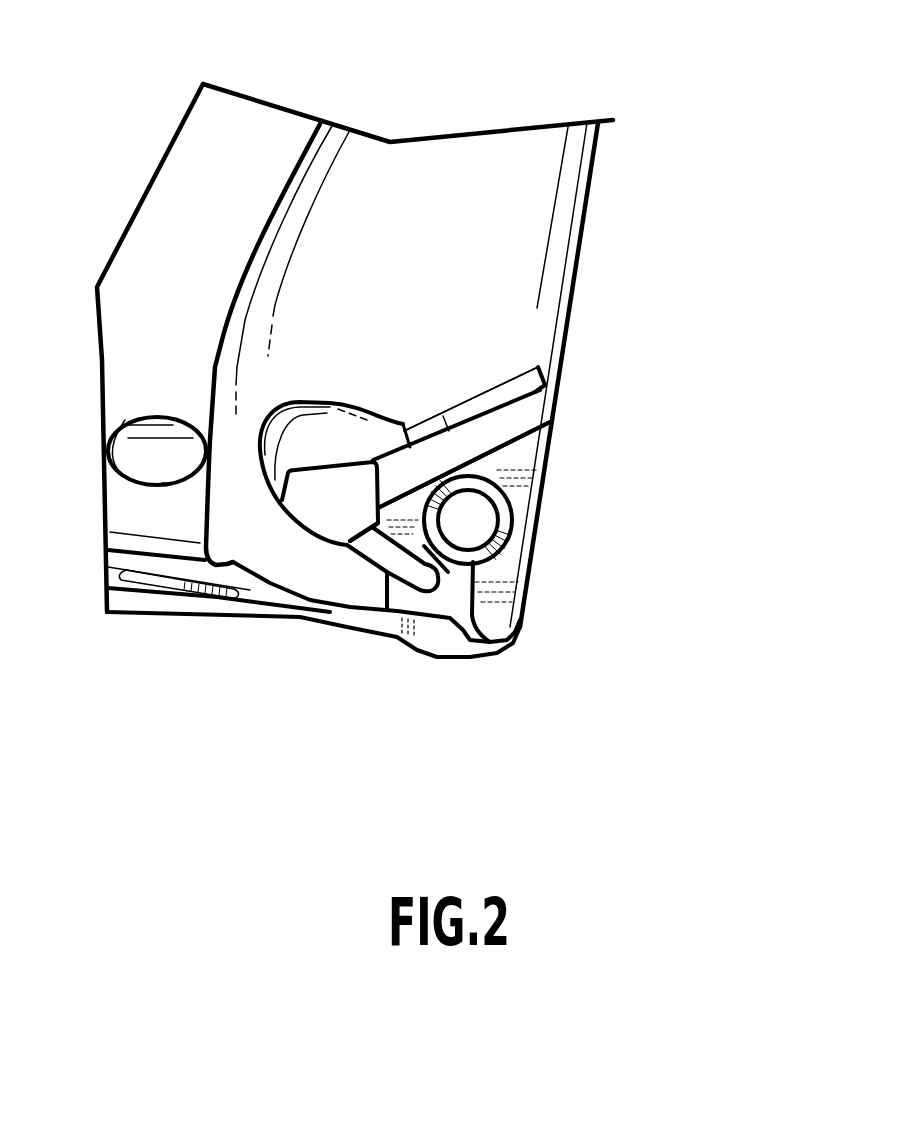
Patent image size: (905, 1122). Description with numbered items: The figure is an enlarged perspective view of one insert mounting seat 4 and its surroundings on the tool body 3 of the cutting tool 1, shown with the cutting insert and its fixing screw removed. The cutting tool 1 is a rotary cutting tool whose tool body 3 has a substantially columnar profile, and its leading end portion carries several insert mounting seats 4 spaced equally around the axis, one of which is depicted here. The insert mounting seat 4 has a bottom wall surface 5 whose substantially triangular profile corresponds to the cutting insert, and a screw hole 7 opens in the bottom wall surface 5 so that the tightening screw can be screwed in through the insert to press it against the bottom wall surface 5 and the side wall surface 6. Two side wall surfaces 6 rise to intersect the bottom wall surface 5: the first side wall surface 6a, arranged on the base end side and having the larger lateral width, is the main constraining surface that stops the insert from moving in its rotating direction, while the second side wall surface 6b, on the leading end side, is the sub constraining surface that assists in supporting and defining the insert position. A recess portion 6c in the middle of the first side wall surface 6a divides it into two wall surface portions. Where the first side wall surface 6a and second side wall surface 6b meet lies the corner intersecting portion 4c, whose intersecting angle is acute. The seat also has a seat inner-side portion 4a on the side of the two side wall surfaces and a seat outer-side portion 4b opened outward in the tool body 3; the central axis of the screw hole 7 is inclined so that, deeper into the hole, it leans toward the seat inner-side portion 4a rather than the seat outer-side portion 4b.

The cutting tool 1 is at (523, 215).
The tool body 3 is at (523, 282).
The insert mounting seat 4 is at (527, 458).
The seat inner-side portion 4a is at (317, 492).
The seat outer-side portion 4b is at (490, 612).
The corner intersecting portion 4c is at (357, 518).
The bottom wall surface 5 is at (513, 563).
The side wall surface 6 is at (470, 413).
The first side wall surface 6a is at (498, 403).
The second side wall surface 6b is at (383, 573).
The recess portion 6c is at (420, 430).
The screw hole 7 is at (477, 557).